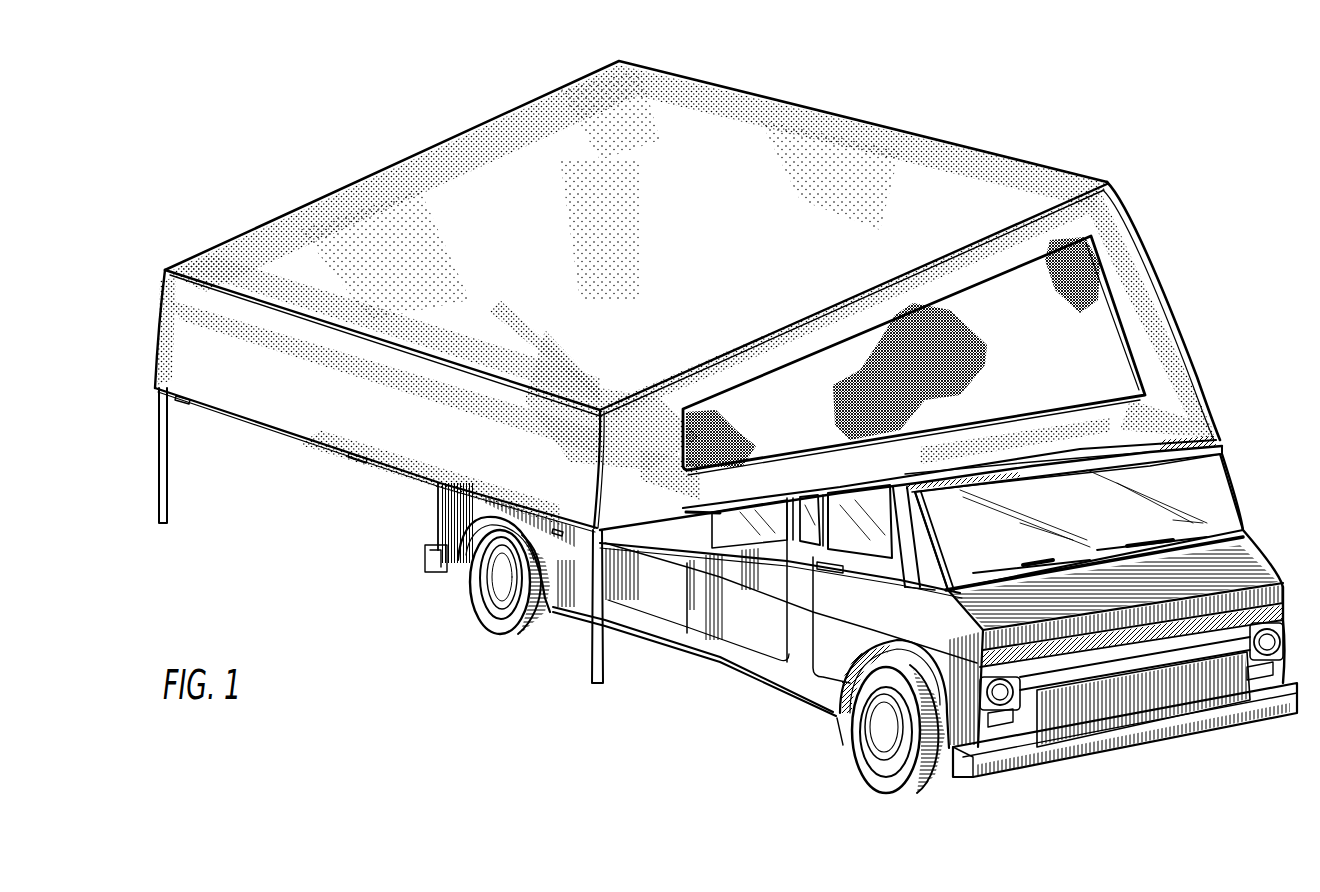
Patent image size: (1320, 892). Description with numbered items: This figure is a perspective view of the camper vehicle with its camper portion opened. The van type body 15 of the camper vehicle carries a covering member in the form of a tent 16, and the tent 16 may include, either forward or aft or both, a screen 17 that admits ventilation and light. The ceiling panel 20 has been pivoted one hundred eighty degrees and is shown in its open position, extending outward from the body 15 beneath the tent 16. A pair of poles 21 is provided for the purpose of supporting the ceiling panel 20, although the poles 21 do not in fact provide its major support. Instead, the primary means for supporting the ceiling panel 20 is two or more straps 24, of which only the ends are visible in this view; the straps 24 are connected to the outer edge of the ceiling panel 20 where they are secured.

The van type body 15 is at (1258, 548).
The tent 16 is at (862, 133).
The screen 17 is at (1016, 283).
The ceiling panel 20 is at (388, 468).
The poles 21 is at (168, 489).
The straps 24 is at (184, 403).